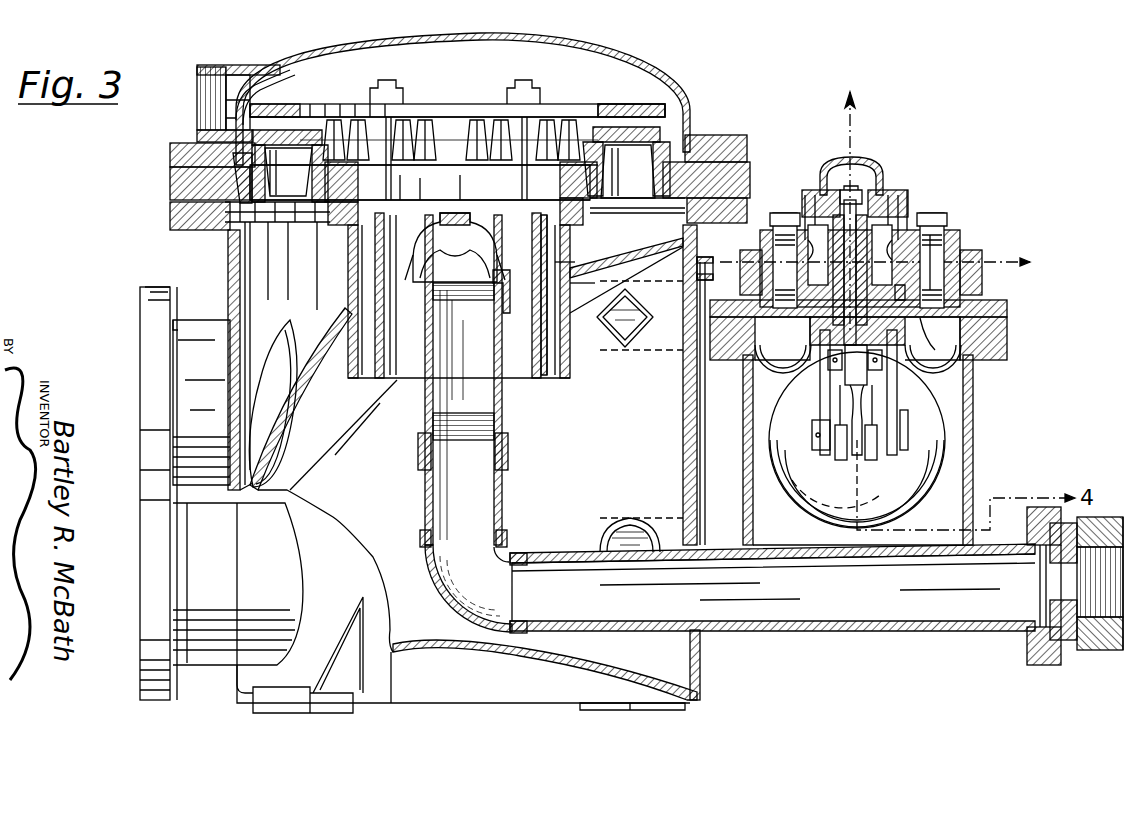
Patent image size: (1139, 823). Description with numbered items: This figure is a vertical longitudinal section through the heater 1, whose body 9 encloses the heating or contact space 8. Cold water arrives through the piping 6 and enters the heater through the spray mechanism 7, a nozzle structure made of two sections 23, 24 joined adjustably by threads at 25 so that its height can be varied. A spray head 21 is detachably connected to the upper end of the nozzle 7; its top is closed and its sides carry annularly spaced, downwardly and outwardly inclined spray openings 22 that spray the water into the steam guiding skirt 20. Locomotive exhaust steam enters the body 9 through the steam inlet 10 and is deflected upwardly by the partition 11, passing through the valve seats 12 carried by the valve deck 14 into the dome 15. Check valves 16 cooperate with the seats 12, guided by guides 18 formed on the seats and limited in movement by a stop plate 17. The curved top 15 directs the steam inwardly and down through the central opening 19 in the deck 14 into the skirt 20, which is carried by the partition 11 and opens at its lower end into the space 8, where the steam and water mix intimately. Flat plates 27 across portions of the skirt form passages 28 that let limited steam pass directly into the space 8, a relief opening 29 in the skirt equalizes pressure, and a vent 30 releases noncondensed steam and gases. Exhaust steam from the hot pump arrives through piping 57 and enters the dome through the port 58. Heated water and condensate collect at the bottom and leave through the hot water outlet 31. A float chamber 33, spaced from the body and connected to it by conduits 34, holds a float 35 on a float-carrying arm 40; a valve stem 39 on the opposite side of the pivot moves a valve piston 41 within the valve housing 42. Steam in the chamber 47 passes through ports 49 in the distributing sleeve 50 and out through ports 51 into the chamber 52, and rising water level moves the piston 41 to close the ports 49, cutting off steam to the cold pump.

The heater 1 is at (220, 262).
The piping 6 is at (877, 610).
The spray mechanism 7 is at (497, 400).
The contact space 8 is at (683, 440).
The body 9 is at (705, 477).
The steam inlet 10 is at (197, 330).
The partition 11 is at (318, 360).
The valve seats 12 is at (250, 190).
The valve deck 14 is at (172, 176).
The dome 15 is at (605, 62).
The check valves 16 is at (300, 130).
The stop plate 17 is at (645, 115).
The guides 18 is at (250, 132).
The central opening 19 is at (550, 185).
The steam guiding skirt 20 is at (352, 372).
The spray head 21 is at (506, 303).
The spray openings 22 is at (420, 280).
The nozzle section 23 is at (445, 388).
The nozzle section 24 is at (450, 495).
The threads 25 is at (418, 455).
The flat plates 27 is at (555, 365).
The passages 28 is at (330, 300).
The relief opening 29 is at (575, 290).
The vent 30 is at (702, 257).
The hot water outlet 31 is at (215, 650).
The float chamber 33 is at (965, 412).
The float 35 is at (940, 446).
The conduits 34 is at (703, 345).
The valve stem 39 is at (856, 190).
The float-carrying arm 40 is at (858, 430).
The valve piston 41 is at (868, 230).
The valve housing 42 is at (935, 212).
The chamber 47 is at (818, 250).
The ports 49 is at (910, 225).
The distributing sleeve 50 is at (825, 178).
The ports 51 is at (905, 291).
The chamber 52 is at (930, 345).
The piping 57 is at (210, 90).
The port 58 is at (250, 90).